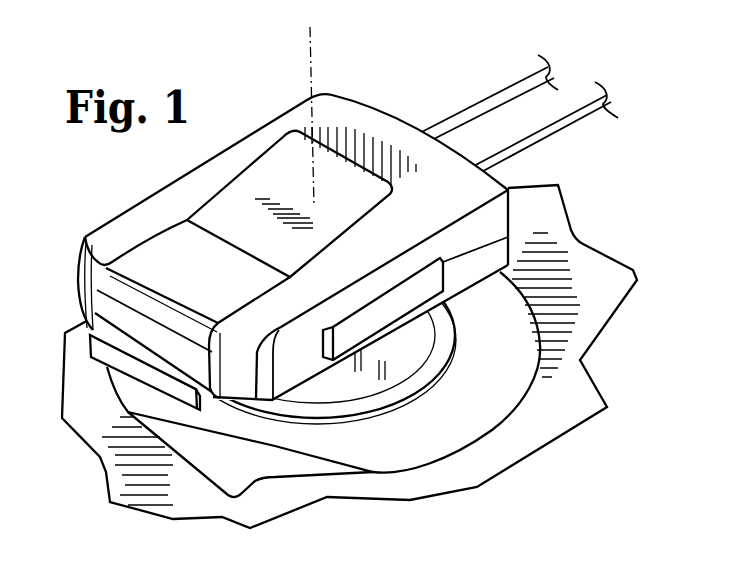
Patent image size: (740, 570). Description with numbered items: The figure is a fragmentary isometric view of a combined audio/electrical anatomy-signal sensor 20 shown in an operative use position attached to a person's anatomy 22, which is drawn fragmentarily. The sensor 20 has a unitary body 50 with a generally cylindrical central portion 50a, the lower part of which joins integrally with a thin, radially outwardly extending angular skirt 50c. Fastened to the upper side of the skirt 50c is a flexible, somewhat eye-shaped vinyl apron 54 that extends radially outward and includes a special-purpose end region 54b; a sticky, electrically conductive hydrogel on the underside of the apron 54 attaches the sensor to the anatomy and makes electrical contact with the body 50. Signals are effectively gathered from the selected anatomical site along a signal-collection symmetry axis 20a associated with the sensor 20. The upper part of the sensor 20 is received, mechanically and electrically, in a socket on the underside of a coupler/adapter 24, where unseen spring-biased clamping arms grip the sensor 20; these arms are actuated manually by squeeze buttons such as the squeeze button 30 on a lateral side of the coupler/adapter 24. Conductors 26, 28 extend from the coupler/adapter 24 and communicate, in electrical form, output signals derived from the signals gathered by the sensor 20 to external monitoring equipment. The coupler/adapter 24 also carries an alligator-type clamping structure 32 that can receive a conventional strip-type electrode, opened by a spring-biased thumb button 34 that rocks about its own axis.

The electrical and audio anatomy-signal sensor 20 is at (508, 311).
The signal-collection symmetry axis 20a is at (395, 61).
The anatomy 22 is at (578, 392).
The coupler/adapter 24 is at (262, 128).
The conductor 26 is at (496, 95).
The conductor 28 is at (583, 120).
The squeeze button 30 is at (410, 300).
The alligator-type clamping structure 32 is at (88, 345).
The spring-biased thumb button 34 is at (258, 178).
The body 50 is at (393, 387).
The central portion 50a is at (381, 355).
The skirt 50c is at (347, 395).
The apron 54 is at (488, 428).
The end region 54b is at (262, 473).